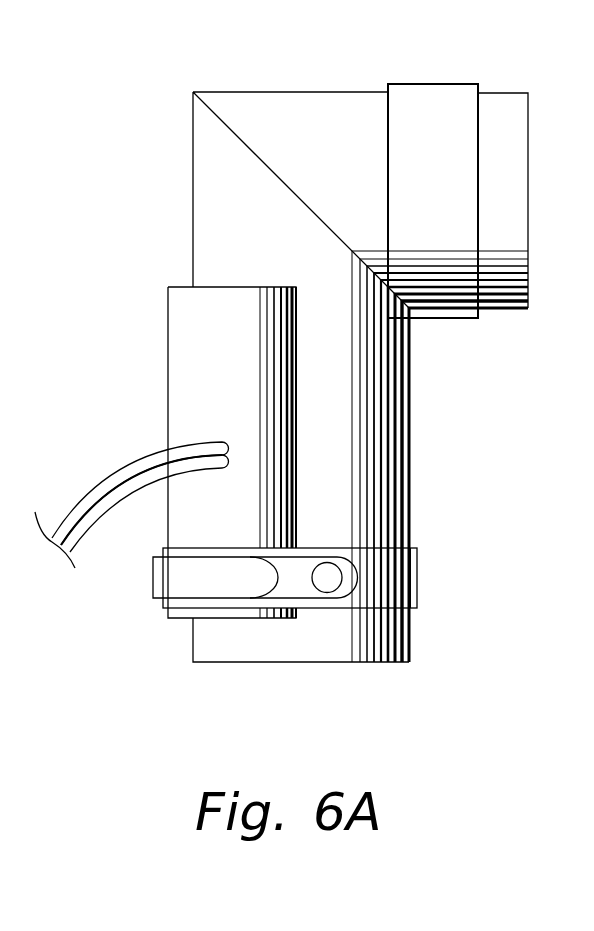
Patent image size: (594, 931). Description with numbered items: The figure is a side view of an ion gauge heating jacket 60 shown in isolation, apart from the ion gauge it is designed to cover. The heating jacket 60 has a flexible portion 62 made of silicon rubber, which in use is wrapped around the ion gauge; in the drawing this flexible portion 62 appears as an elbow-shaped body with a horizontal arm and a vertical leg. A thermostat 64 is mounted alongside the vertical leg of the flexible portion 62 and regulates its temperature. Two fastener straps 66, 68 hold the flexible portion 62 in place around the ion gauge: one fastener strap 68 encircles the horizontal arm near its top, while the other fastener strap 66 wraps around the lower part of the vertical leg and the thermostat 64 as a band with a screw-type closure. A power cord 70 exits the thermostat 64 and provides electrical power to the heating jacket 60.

The ion gauge heating jacket 60 is at (150, 142).
The flexible portion 62 is at (315, 90).
The thermostat 64 is at (168, 350).
The fastener strap 66 is at (172, 575).
The fastener strap 68 is at (435, 82).
The power cord 70 is at (145, 452).